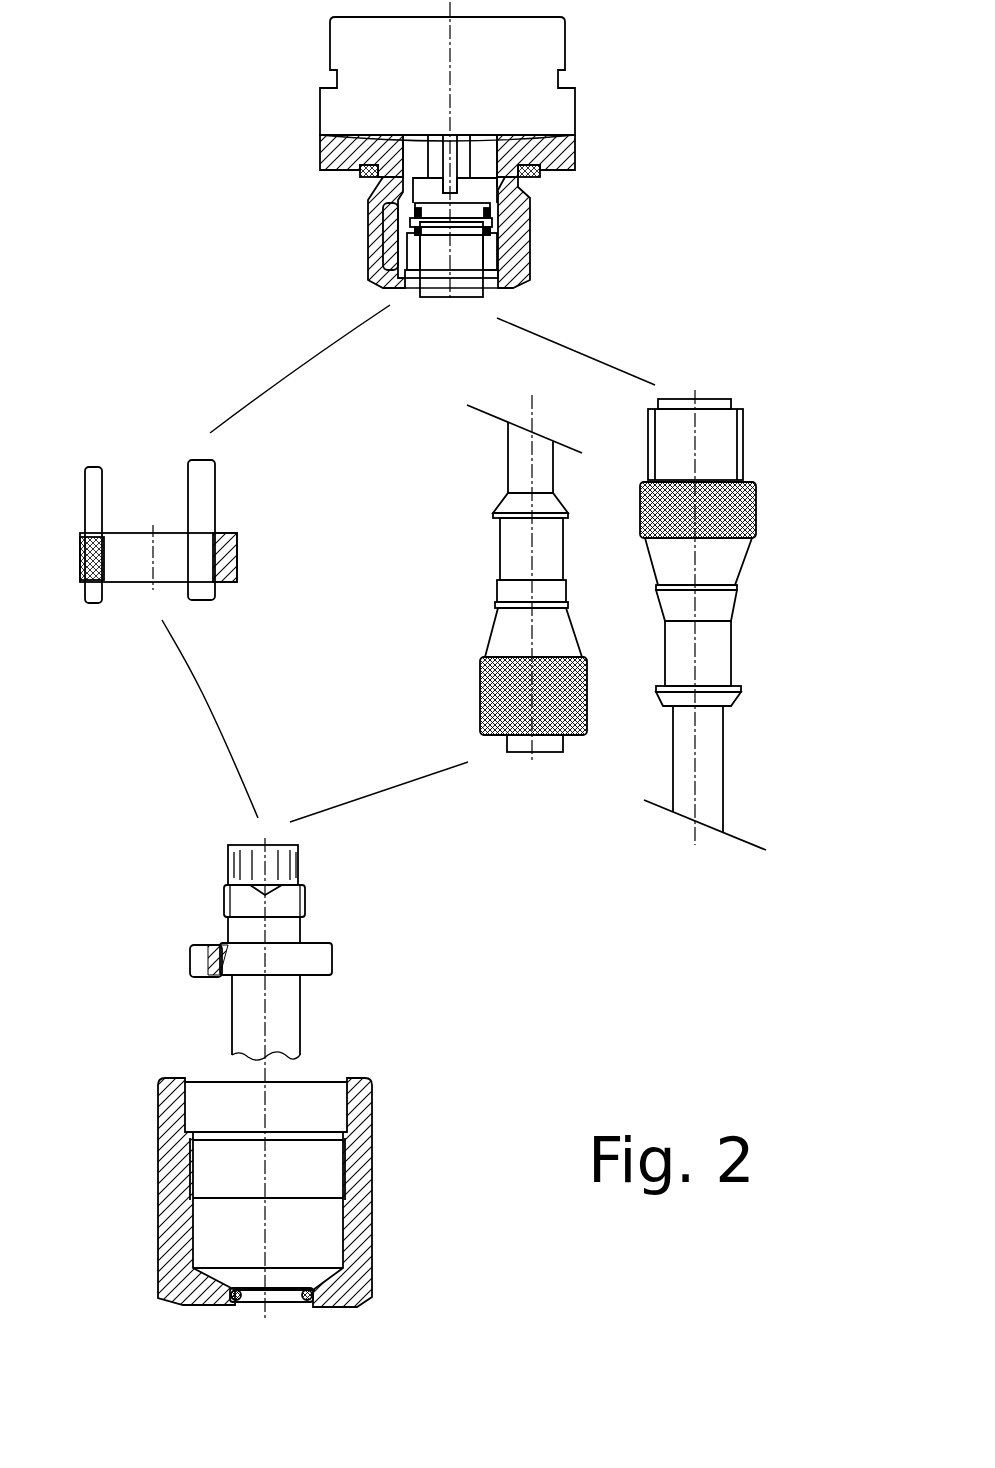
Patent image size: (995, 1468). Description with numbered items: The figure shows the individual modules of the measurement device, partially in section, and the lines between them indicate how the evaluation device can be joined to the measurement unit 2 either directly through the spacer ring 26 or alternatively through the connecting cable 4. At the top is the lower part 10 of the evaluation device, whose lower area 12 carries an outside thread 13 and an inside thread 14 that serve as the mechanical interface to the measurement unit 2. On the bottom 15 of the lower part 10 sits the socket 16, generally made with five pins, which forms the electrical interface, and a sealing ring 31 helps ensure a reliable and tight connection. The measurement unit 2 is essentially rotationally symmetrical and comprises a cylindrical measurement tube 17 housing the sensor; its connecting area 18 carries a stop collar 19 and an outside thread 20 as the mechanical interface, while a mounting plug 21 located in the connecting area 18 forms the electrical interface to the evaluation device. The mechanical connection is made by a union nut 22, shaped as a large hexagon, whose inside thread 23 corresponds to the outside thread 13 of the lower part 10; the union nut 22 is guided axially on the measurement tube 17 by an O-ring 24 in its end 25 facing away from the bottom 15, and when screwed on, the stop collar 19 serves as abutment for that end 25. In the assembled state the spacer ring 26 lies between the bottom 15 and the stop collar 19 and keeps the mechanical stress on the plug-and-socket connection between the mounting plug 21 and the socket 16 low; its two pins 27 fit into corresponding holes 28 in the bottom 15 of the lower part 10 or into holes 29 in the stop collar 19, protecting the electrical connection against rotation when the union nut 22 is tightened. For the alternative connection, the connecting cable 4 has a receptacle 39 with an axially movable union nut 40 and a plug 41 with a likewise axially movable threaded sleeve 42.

The measurement unit 2 is at (193, 992).
The connecting cable 4 is at (518, 457).
The lower part 10 is at (603, 130).
The lower area 12 is at (356, 238).
The outside thread 13 is at (527, 240).
The inside thread 14 is at (483, 245).
The bottom 15 is at (513, 292).
The socket 16 is at (428, 273).
The measurement tube 17 is at (293, 1025).
The connecting area 18 is at (323, 900).
The stop collar 19 is at (325, 957).
The outside thread 20 is at (300, 853).
The mounting plug 21 is at (240, 843).
The union nut 22 is at (370, 1212).
The inside thread 23 is at (342, 1140).
The O-ring 24 is at (312, 1307).
The end 25 is at (202, 1313).
The spacer ring 26 is at (222, 560).
The pins 27 is at (196, 490).
The holes 28 is at (390, 250).
The holes 29 is at (203, 953).
The sealing ring 31 is at (538, 172).
The receptacle 39 is at (548, 744).
The union nut 40 is at (483, 687).
The plug 41 is at (735, 403).
The threaded sleeve 42 is at (760, 514).